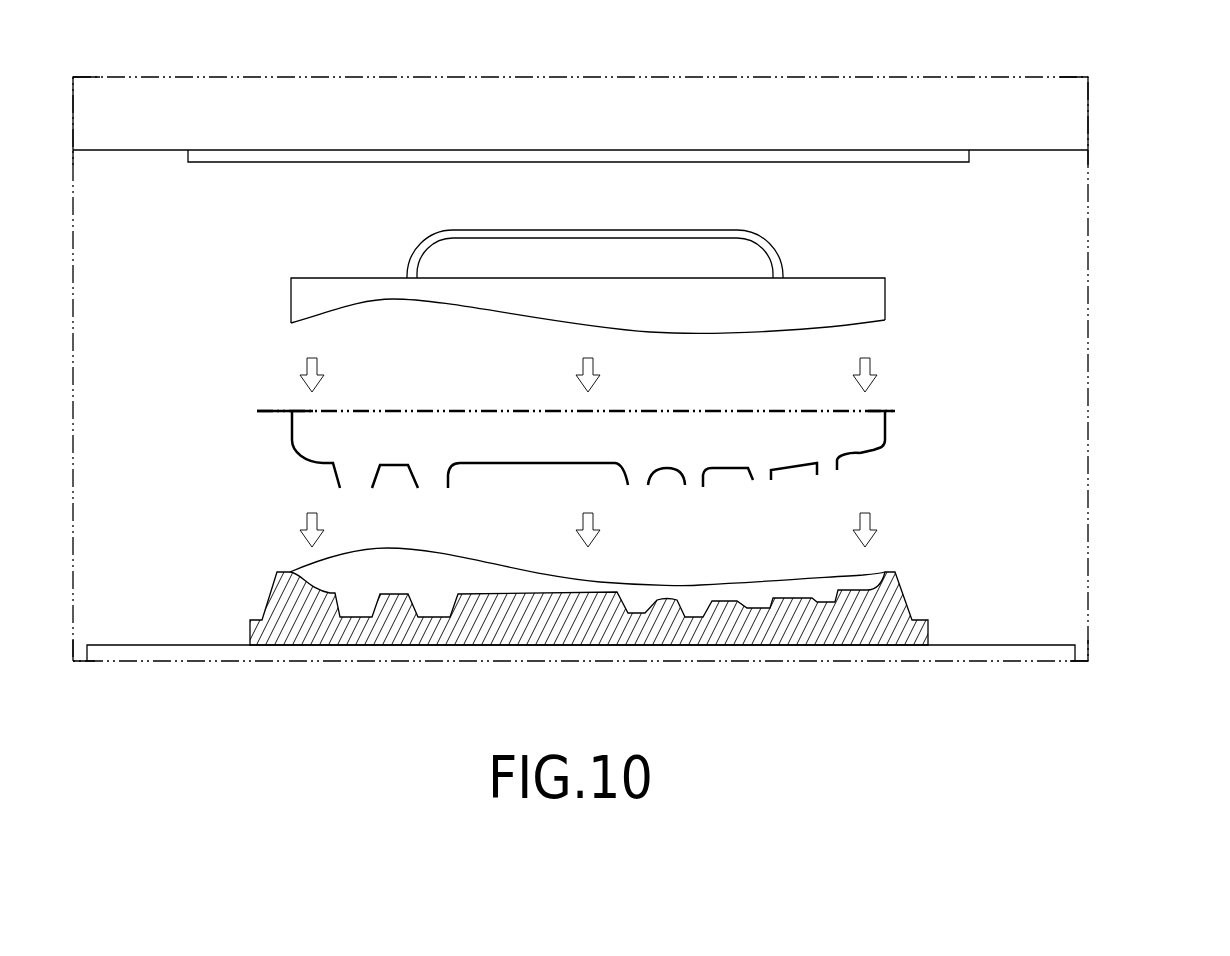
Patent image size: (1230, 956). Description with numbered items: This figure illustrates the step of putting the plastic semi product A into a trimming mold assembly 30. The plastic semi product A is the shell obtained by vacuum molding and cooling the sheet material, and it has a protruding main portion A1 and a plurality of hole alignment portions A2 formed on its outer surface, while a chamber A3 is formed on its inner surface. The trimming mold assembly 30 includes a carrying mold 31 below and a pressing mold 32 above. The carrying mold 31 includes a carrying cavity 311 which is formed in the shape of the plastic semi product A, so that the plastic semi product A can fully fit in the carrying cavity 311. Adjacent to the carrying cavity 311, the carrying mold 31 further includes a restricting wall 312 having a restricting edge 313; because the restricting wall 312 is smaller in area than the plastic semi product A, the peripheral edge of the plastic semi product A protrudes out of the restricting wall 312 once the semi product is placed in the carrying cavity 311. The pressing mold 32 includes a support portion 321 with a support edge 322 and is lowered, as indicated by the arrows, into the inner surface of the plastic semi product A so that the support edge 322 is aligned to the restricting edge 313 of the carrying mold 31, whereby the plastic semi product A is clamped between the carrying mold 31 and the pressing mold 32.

The trimming mold assembly 30 is at (642, 461).
The pressing mold 32 is at (715, 296).
The support portion 321 is at (805, 290).
The support edge 322 is at (800, 333).
The carrying mold 31 is at (613, 588).
The carrying cavity 311 is at (763, 608).
The restricting wall 312 is at (412, 577).
The restricting edge 313 is at (497, 567).
The plastic semi product A is at (585, 449).
The protruding main portion A1 is at (885, 445).
The hole alignment portions A2 is at (837, 466).
The chamber A3 is at (803, 438).